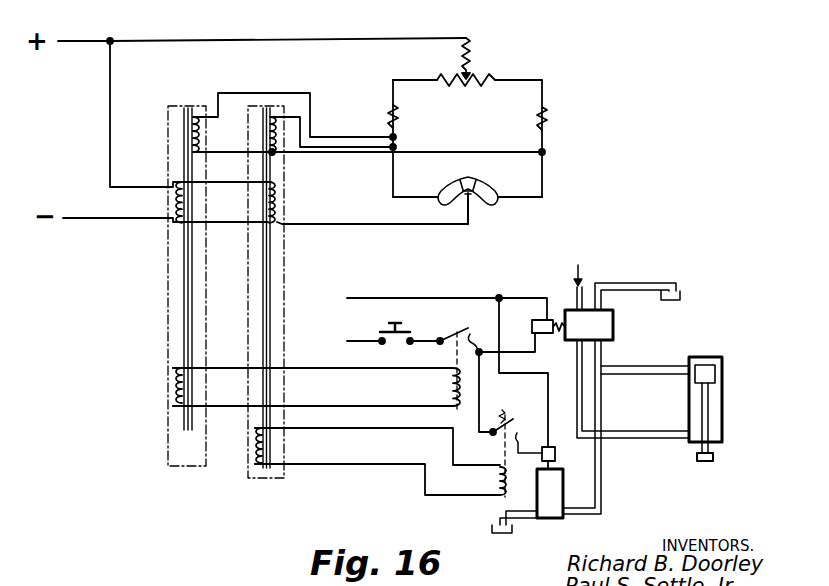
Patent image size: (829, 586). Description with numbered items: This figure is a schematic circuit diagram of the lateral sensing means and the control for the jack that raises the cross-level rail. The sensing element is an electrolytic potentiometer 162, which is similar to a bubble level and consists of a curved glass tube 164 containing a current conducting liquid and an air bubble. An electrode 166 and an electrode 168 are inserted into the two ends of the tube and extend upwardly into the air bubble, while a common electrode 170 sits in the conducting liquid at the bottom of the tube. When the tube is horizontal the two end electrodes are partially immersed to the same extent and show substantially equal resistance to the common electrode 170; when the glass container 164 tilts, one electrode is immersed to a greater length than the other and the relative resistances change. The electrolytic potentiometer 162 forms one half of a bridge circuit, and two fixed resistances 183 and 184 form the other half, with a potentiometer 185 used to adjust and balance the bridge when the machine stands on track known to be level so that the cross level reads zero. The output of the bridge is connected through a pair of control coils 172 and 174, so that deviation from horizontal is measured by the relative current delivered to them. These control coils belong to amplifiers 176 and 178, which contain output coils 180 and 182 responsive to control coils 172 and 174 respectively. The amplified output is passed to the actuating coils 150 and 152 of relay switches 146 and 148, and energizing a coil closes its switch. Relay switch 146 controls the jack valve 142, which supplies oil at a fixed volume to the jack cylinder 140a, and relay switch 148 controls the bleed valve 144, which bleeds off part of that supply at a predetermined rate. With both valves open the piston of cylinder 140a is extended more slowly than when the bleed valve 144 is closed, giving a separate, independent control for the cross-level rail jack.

The jack cylinder 140a is at (723, 402).
The jack valve 142 is at (570, 308).
The bleed valve 144 is at (560, 520).
The relay switch 146 is at (455, 332).
The relay switch 148 is at (519, 441).
The actuating coil 150 is at (453, 382).
The actuating coil 152 is at (500, 478).
The electrolytic potentiometer 162 is at (492, 211).
The curved glass tube 164 is at (482, 183).
The electrode 166 is at (430, 196).
The electrode 168 is at (520, 198).
The common electrode 170 is at (475, 228).
The control coil 172 is at (195, 113).
The control coil 174 is at (275, 143).
The amplifier 176 is at (165, 457).
The amplifier 178 is at (255, 483).
The output coil 180 is at (173, 388).
The output coil 182 is at (253, 443).
The fixed resistance 183 is at (400, 121).
The fixed resistance 184 is at (549, 119).
The potentiometer 185 is at (496, 73).